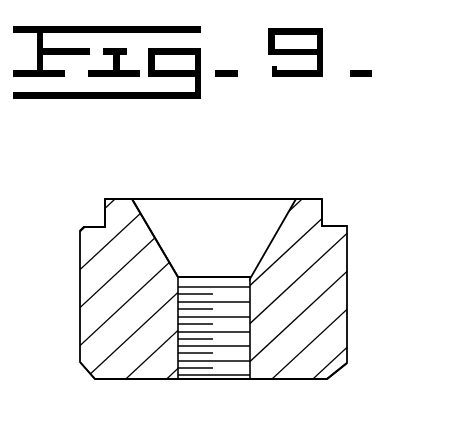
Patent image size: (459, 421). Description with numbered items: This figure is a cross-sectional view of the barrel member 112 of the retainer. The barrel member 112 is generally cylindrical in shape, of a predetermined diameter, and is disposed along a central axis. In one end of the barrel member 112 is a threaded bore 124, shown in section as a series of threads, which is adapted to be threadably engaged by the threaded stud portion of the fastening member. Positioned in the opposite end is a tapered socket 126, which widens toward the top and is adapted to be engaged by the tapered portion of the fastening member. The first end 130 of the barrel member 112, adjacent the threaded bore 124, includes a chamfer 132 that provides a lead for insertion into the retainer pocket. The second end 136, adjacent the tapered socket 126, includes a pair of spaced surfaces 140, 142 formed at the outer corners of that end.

The barrel member 112 is at (353, 285).
The threaded bore 124 is at (242, 352).
The tapered socket 126 is at (148, 222).
The first end 130 is at (107, 380).
The chamfer 132 is at (340, 373).
The second end 136 is at (321, 199).
The spaced surface 140 is at (104, 221).
The spaced surface 142 is at (325, 222).